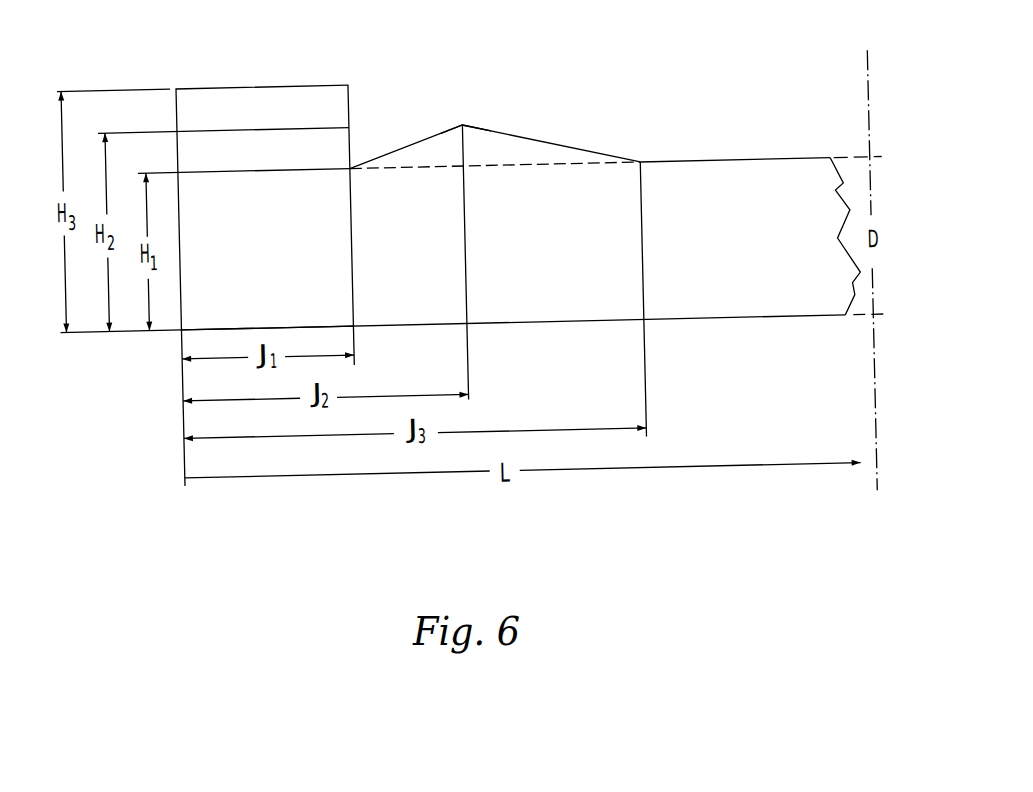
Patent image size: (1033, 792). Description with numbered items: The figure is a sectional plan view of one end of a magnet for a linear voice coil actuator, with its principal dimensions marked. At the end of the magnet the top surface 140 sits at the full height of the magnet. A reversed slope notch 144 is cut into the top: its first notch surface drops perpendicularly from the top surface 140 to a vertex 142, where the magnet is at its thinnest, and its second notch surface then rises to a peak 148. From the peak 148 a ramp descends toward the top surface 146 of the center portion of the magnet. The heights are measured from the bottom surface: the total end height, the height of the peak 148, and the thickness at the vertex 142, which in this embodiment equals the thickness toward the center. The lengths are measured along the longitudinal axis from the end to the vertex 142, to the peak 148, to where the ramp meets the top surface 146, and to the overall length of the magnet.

The top surface of the end of the magnet 140 is at (222, 89).
The vertex 142 is at (345, 166).
The reversed slope notch 144 is at (387, 112).
The top surface of the center portion of the magnet 146 is at (778, 172).
The peak 148 is at (462, 132).